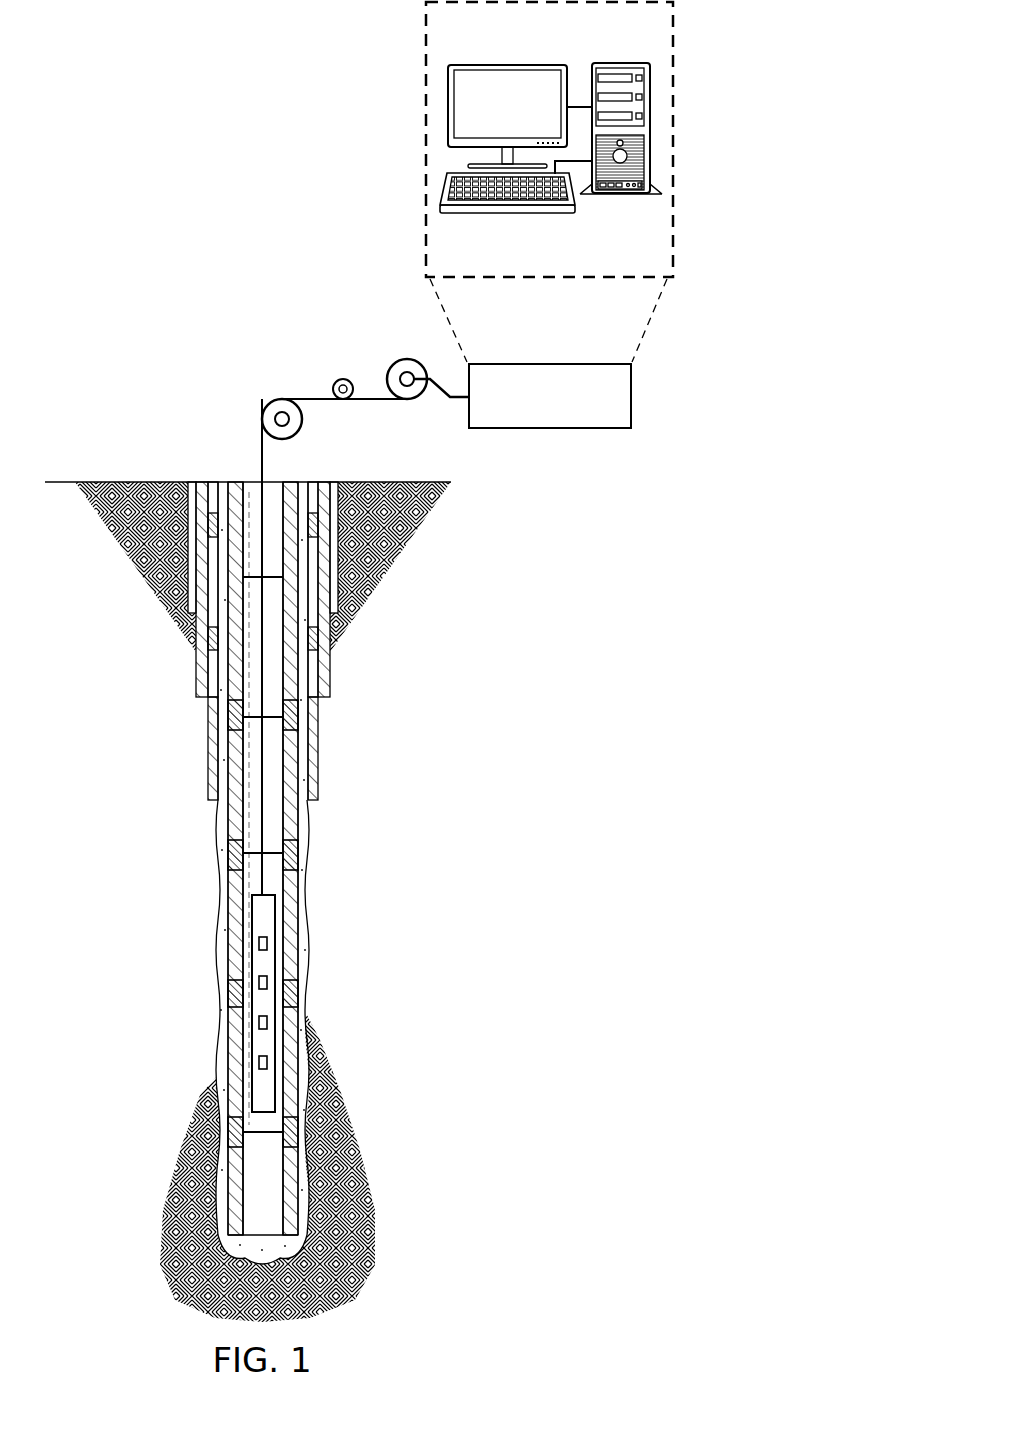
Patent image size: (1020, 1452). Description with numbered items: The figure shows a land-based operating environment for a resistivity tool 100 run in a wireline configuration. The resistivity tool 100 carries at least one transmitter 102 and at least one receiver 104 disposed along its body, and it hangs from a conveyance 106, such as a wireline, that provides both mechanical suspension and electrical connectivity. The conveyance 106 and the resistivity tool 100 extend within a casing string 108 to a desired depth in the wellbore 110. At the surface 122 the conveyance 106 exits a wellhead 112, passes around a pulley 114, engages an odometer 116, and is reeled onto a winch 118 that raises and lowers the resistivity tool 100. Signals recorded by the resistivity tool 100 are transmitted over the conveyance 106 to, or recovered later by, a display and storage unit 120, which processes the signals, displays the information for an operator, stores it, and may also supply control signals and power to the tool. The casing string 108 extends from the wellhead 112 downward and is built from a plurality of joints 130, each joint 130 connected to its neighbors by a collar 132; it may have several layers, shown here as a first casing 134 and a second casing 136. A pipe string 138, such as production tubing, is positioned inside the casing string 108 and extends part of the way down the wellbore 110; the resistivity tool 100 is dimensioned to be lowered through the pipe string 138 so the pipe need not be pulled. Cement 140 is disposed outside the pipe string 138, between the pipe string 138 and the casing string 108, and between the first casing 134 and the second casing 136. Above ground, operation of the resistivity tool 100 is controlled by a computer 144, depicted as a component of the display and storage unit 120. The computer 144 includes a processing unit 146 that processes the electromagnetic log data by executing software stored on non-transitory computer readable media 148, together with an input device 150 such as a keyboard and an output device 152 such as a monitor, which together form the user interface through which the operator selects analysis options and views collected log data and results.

The resistivity tool 100 is at (240, 1035).
The transmitter 102 is at (258, 943).
The receiver 104 is at (264, 979).
The conveyance 106 is at (265, 467).
The casing string 108 is at (175, 677).
The wellbore 110 is at (306, 768).
The wellhead 112 is at (245, 470).
The pulley 114 is at (270, 400).
The odometer 116 is at (338, 380).
The winch 118 is at (398, 360).
The display and storage unit 120 is at (633, 404).
The surface 122 is at (132, 480).
The joint 130 is at (200, 707).
The collar 132 is at (208, 752).
The first casing 134 is at (313, 712).
The second casing 136 is at (323, 672).
The pipe string 138 is at (232, 1164).
The cement 140 is at (305, 892).
The computer 144 is at (682, 88).
The processing unit 146 is at (626, 204).
The non-transitory computer readable media 148 is at (620, 63).
The input device 150 is at (515, 214).
The output device 152 is at (507, 63).